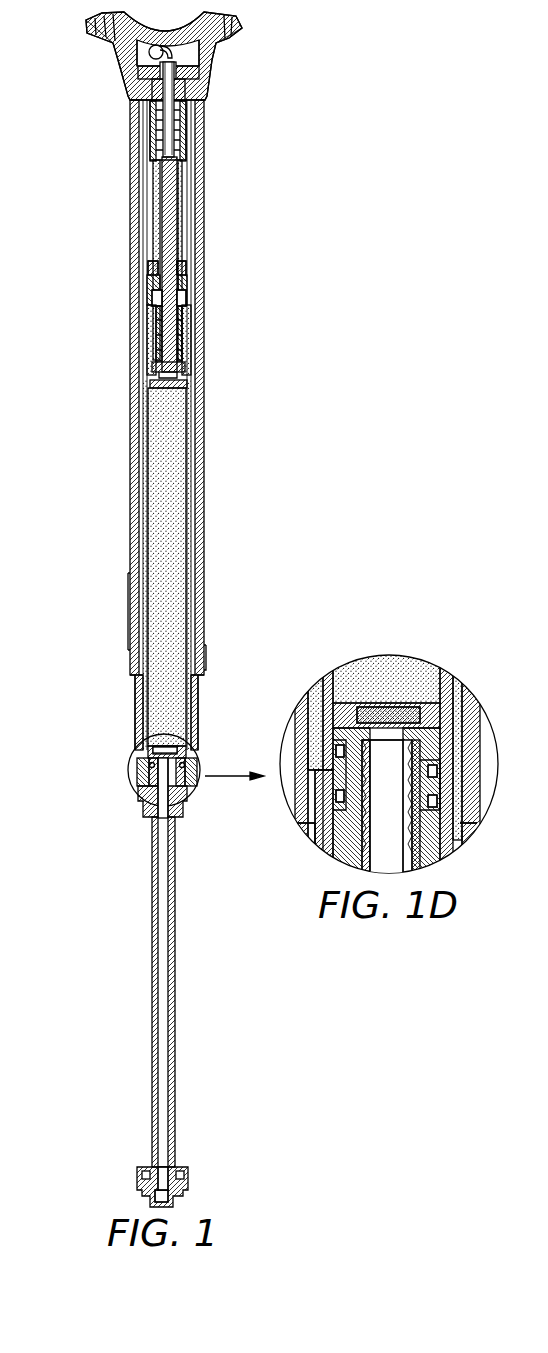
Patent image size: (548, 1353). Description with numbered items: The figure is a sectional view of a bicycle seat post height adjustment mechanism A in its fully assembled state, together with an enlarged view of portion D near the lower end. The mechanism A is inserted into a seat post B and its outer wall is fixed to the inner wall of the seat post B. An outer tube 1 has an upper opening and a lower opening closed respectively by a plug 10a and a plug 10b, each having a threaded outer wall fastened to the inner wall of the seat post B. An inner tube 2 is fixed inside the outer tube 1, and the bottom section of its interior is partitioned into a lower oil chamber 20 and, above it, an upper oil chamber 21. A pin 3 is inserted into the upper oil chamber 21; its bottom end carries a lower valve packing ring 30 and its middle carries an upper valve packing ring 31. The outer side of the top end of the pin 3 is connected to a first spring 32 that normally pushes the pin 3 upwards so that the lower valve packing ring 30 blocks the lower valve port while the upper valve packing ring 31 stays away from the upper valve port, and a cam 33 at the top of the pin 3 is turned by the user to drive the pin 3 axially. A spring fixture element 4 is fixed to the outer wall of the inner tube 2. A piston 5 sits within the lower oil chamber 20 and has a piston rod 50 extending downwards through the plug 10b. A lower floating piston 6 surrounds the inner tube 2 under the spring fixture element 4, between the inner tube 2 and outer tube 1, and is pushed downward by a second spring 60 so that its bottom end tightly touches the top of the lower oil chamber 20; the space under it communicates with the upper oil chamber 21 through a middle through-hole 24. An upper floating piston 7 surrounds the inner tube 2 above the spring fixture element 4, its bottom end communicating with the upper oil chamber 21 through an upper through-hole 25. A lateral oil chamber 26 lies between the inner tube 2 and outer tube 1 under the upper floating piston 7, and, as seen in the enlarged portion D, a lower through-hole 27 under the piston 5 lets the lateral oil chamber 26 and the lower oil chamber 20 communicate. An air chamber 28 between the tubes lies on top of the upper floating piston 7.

In FIG. 1, the plug 10a is at (206, 78).
In FIG. 1, the cam 33 is at (150, 52).
In FIG. 1, the first spring 32 is at (184, 108).
In FIG. 1, the seat post B is at (206, 146).
In FIG. 1, the air chamber 28 is at (152, 200).
In FIG. 1, the pin 3 is at (170, 186).
In FIG. 1, the upper oil chamber 21 is at (180, 202).
In FIG. 1, the bicycle seat post height adjustment mechanism A is at (188, 218).
In FIG. 1, the upper floating piston 7 is at (183, 268).
In FIG. 1, the upper through-hole 25 is at (134, 284).
In FIG. 1, the upper valve packing ring 31 is at (184, 297).
In FIG. 1, the spring fixture element 4 is at (144, 302).
In FIG. 1, the second spring 60 is at (205, 333).
In FIG. 1, the lateral oil chamber 26 is at (144, 346).
In FIG. 1D, the lateral oil chamber 26 is at (458, 705).
In FIG. 1, the lower floating piston 6 is at (186, 360).
In FIG. 1, the middle through-hole 24 is at (156, 372).
In FIG. 1, the lower valve packing ring 30 is at (192, 388).
In FIG. 1, the lower oil chamber 20 is at (172, 513).
In FIG. 1D, the lower oil chamber 20 is at (384, 680).
In FIG. 1, the piston 5 is at (183, 747).
In FIG. 1D, the piston 5 is at (432, 705).
In FIG. 1, the portion D is at (206, 766).
In FIG. 1, the lower through-hole 27 is at (140, 768).
In FIG. 1D, the lower through-hole 27 is at (318, 800).
In FIG. 1, the plug 10b is at (188, 800).
In FIG. 1D, the plug 10b is at (445, 828).
In FIG. 1, the piston rod 50 is at (153, 1036).
In FIG. 1D, the piston rod 50 is at (410, 845).
In FIG. 1D, the outer tube 1 is at (302, 712).
In FIG. 1D, the inner tube 2 is at (329, 705).